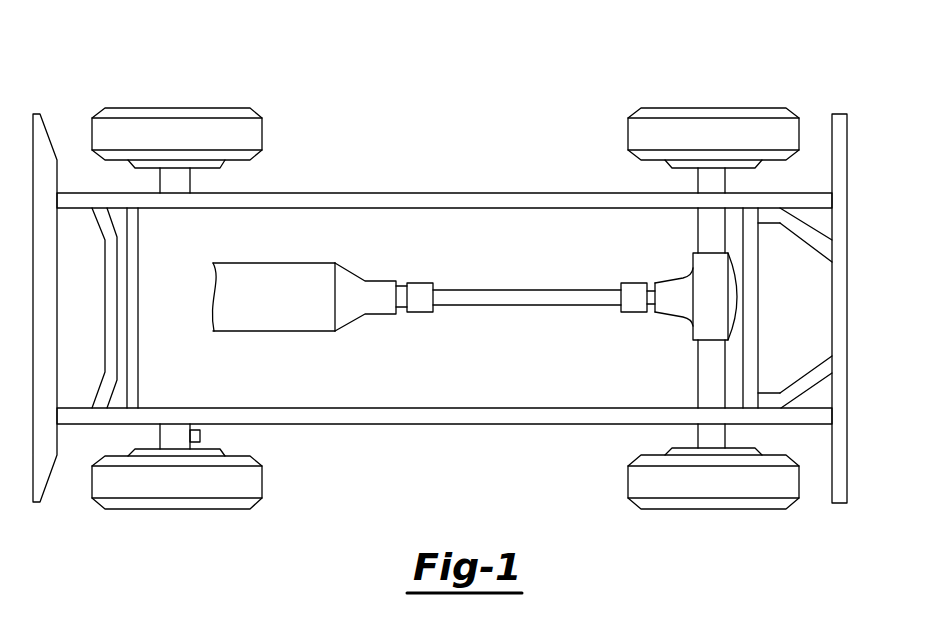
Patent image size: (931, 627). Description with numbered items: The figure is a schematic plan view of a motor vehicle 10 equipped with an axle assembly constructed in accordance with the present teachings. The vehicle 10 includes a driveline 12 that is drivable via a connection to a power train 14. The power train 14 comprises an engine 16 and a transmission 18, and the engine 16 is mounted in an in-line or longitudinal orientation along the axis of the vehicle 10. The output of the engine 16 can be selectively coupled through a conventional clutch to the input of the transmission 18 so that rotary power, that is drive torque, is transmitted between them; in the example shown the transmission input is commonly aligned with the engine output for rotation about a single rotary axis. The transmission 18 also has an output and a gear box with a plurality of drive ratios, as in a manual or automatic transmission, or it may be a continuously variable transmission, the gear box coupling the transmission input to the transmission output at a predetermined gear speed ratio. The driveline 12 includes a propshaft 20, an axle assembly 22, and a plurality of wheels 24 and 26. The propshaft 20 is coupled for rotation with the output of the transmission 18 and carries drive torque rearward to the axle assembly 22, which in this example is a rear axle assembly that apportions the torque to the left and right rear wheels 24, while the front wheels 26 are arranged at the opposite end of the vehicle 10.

The vehicle 10 is at (533, 59).
The driveline 12 is at (647, 278).
The power train 14 is at (309, 317).
The engine 16 is at (274, 311).
The transmission 18 is at (380, 291).
The propshaft 20 is at (518, 289).
The axle assembly 22 is at (668, 333).
The rear wheels 24 is at (679, 108).
The wheels 26 is at (165, 108).